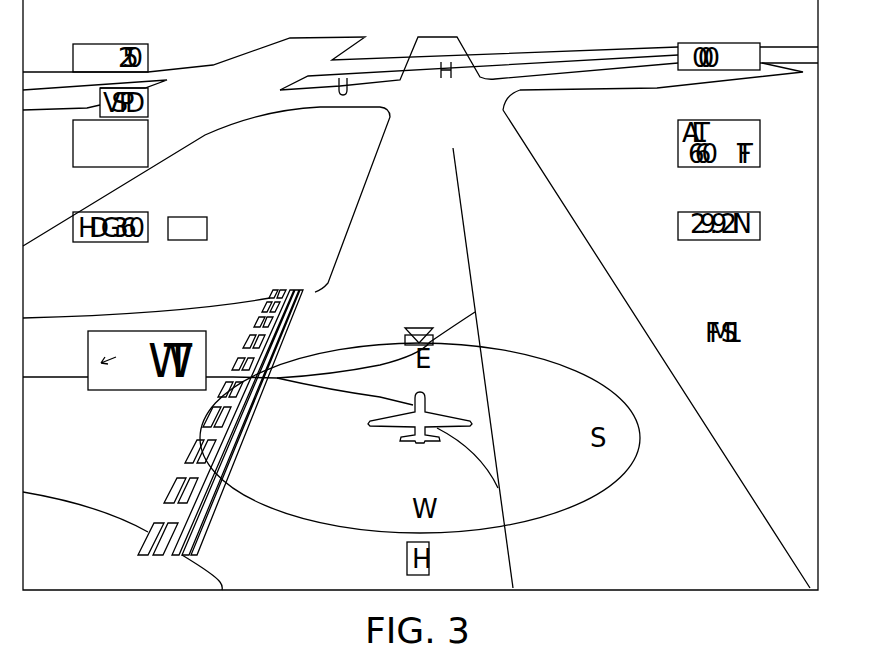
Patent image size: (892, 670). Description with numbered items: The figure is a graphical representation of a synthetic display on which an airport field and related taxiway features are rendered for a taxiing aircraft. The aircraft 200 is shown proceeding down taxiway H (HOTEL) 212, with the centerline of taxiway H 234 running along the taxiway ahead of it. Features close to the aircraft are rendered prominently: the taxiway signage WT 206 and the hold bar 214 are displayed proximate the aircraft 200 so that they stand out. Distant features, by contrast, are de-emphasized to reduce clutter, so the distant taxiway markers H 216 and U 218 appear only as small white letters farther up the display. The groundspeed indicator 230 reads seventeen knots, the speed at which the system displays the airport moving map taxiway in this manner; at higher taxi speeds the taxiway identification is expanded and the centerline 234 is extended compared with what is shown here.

The aircraft 200 is at (395, 432).
The taxiway signage WT 206 is at (180, 310).
The taxiway H (HOTEL) 212 is at (428, 208).
The hold bar 214 is at (293, 320).
The distant taxiway marker H 216 is at (446, 80).
The distant taxiway marker U 218 is at (343, 97).
The groundspeed indicator 230 is at (148, 135).
The centerline of taxiway H (HOTEL) 234 is at (467, 232).